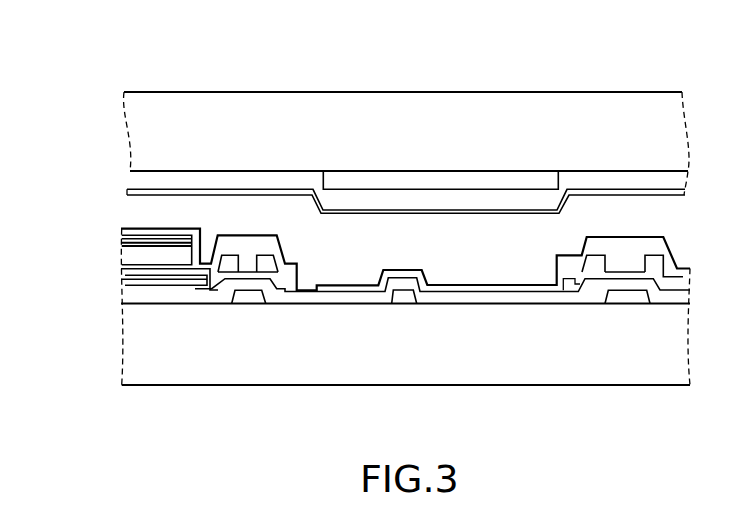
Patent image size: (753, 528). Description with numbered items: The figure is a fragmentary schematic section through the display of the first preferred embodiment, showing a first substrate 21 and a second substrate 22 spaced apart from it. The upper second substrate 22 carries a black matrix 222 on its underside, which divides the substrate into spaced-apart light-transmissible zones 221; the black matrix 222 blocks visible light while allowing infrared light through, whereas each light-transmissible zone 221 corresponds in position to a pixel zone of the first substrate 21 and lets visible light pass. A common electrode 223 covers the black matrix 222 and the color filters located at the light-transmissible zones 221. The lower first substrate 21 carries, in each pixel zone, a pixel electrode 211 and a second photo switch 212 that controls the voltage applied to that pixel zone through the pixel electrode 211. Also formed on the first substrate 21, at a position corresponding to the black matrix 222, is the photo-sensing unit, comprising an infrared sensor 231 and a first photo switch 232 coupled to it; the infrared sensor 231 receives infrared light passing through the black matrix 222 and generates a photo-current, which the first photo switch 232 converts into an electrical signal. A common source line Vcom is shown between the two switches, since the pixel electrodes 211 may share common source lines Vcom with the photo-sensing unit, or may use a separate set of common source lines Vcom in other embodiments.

The first substrate 21 is at (132, 395).
The second substrate 22 is at (178, 87).
The pixel electrode 211 is at (535, 289).
The second photo switch 212 is at (621, 307).
The light-transmissible zone 221 is at (342, 187).
The black matrix 222 is at (138, 181).
The common electrode 223 is at (158, 195).
The infrared sensor 231 is at (120, 287).
The first photo switch 232 is at (287, 298).
The common source line Vcom is at (400, 307).